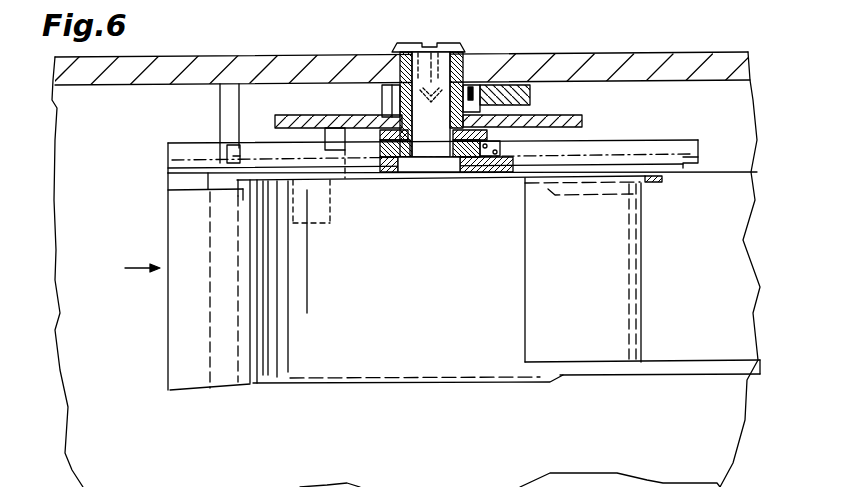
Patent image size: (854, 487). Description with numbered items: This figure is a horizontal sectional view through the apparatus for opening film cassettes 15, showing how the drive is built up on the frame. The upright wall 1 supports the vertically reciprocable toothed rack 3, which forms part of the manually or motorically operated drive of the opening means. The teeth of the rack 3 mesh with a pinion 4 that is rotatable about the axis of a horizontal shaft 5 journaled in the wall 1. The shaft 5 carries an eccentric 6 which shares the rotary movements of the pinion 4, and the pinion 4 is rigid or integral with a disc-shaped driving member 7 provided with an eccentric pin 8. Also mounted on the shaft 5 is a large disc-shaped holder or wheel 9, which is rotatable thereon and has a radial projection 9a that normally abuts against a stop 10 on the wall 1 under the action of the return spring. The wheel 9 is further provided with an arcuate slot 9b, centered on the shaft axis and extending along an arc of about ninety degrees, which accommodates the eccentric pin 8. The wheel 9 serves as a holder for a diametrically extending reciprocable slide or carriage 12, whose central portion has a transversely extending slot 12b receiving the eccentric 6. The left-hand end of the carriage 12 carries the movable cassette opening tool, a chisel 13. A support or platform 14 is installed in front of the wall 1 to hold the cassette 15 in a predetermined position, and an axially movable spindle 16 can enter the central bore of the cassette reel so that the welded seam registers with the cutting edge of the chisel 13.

The upright wall 1 is at (686, 53).
The toothed rack 3 is at (512, 82).
The pinion 4 is at (382, 98).
The horizontal shaft 5 is at (437, 176).
The eccentric 6 is at (405, 176).
The disc-shaped driving member 7 is at (308, 118).
The eccentric pin 8 is at (343, 128).
The disc-shaped holder or wheel 9 is at (653, 146).
The radial projection 9a is at (237, 152).
The arcuate slot 9b is at (345, 180).
The stop 10 is at (220, 102).
The slide or carriage 12 is at (698, 158).
The transversely extending slot 12b is at (470, 178).
The chisel 13 is at (245, 320).
The support or platform 14 is at (650, 378).
The film cassette 15 is at (393, 390).
The spindle 16 is at (323, 225).